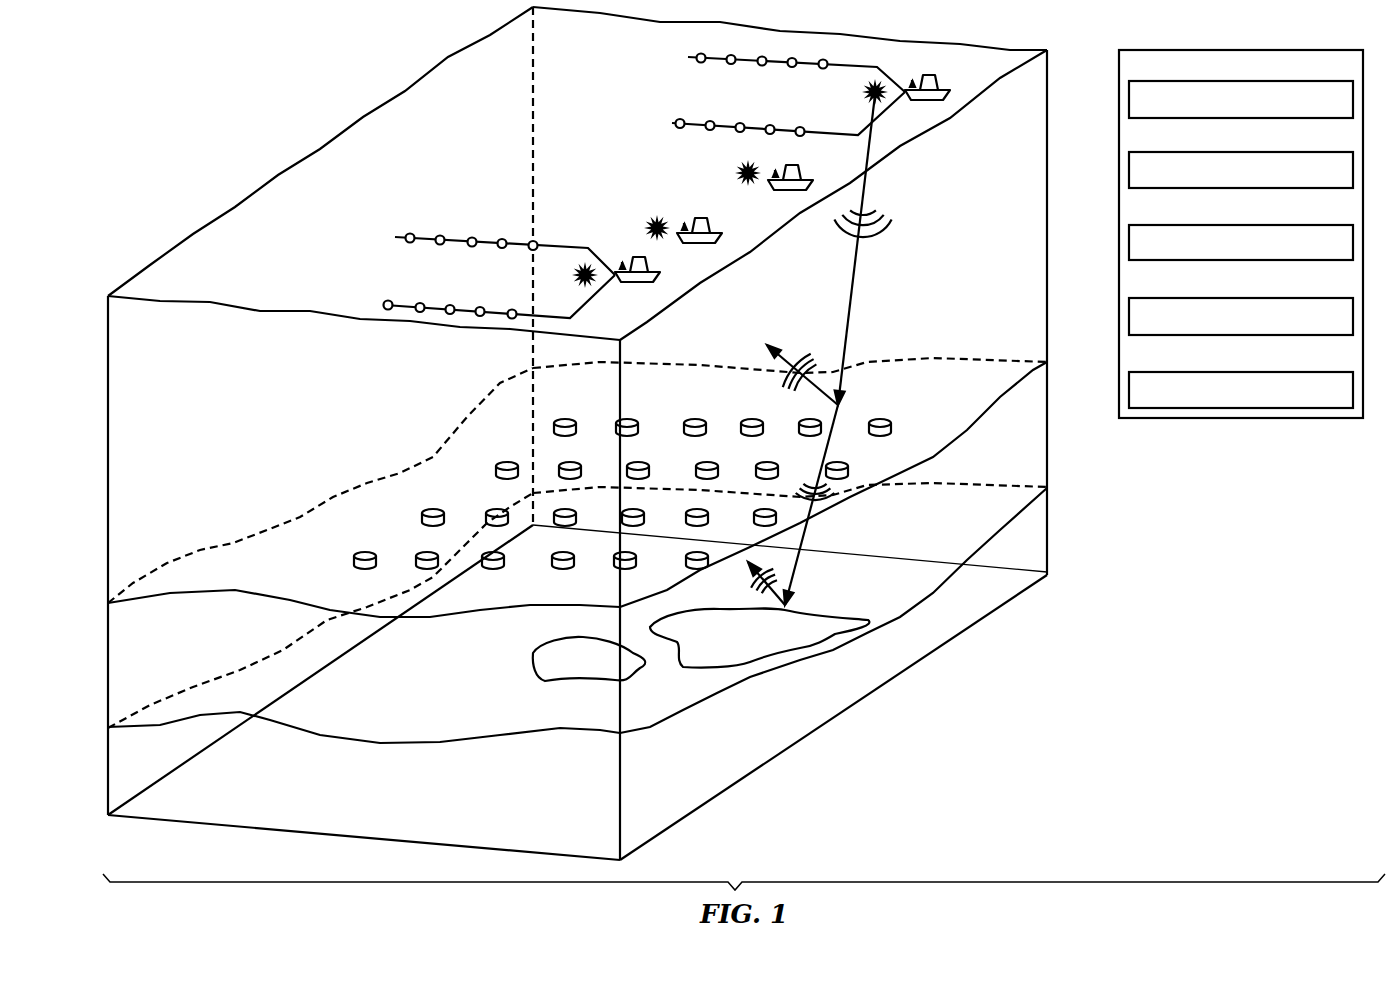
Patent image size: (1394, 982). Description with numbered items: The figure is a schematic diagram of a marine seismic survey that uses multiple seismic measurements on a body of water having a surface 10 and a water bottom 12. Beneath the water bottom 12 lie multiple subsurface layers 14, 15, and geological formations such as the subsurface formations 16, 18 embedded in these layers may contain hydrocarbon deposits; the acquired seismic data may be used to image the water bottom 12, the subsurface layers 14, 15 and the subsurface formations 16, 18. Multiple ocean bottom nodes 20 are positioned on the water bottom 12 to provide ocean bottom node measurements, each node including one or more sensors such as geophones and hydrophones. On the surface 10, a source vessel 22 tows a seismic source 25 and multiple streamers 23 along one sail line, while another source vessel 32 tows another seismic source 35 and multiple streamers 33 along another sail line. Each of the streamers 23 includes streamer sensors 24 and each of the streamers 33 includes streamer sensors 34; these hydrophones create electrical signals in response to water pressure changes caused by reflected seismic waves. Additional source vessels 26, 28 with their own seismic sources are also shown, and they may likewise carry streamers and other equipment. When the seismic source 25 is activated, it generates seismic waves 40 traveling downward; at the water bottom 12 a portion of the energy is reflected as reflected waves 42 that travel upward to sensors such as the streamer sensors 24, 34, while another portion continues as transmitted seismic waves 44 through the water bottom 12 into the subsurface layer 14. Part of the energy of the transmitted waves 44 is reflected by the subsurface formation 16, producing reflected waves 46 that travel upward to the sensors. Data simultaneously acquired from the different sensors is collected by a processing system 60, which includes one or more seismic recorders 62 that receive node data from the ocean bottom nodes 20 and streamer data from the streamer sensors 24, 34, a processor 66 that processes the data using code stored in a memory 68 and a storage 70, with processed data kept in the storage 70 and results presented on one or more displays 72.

The surface 10 is at (322, 148).
The water bottom 12 is at (1030, 385).
The subsurface layer 14 is at (1030, 510).
The subsurface layer 15 is at (845, 705).
The subsurface formation 16 is at (832, 620).
The subsurface formation 18 is at (537, 655).
The ocean bottom nodes 20 is at (432, 510).
The source vessel 22 is at (938, 82).
The streamers 23 is at (700, 56).
The streamer sensors 24 is at (730, 63).
The seismic source 25 is at (868, 88).
The source vessel 26 is at (800, 168).
The source vessel 28 is at (710, 223).
The source vessel 32 is at (637, 257).
The streamers 33 is at (400, 237).
The streamer sensors 34 is at (440, 246).
The seismic source 35 is at (738, 175).
The seismic waves 40 is at (845, 225).
The reflected waves 42 is at (795, 368).
The transmitted seismic waves 44 is at (825, 497).
The reflected waves 46 is at (770, 574).
The processing system 60 is at (1240, 50).
The seismic recorders 62 is at (1243, 81).
The processor 66 is at (1243, 152).
The memory 68 is at (1243, 225).
The storage 70 is at (1243, 298).
The displays 72 is at (1243, 372).